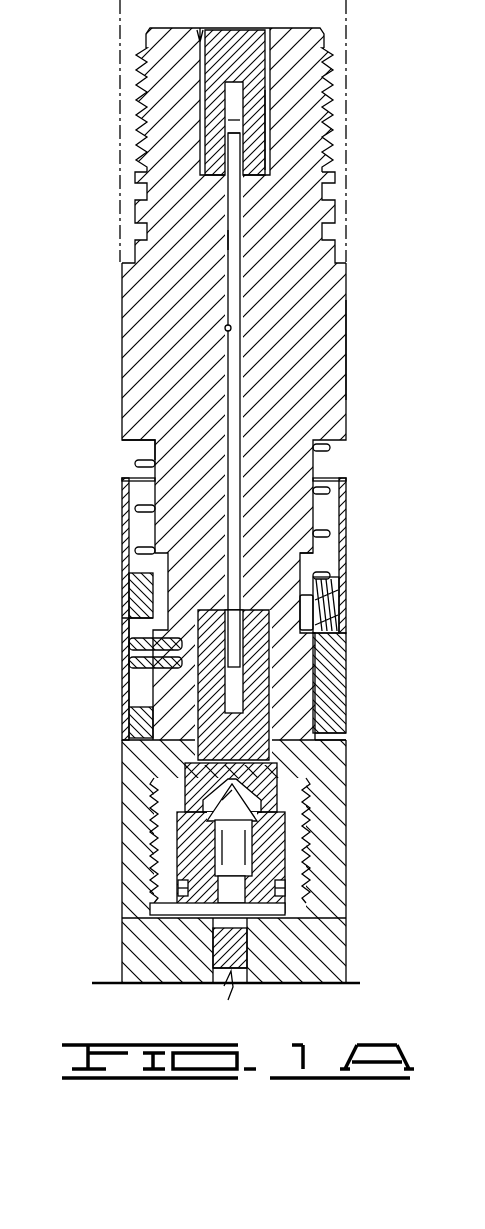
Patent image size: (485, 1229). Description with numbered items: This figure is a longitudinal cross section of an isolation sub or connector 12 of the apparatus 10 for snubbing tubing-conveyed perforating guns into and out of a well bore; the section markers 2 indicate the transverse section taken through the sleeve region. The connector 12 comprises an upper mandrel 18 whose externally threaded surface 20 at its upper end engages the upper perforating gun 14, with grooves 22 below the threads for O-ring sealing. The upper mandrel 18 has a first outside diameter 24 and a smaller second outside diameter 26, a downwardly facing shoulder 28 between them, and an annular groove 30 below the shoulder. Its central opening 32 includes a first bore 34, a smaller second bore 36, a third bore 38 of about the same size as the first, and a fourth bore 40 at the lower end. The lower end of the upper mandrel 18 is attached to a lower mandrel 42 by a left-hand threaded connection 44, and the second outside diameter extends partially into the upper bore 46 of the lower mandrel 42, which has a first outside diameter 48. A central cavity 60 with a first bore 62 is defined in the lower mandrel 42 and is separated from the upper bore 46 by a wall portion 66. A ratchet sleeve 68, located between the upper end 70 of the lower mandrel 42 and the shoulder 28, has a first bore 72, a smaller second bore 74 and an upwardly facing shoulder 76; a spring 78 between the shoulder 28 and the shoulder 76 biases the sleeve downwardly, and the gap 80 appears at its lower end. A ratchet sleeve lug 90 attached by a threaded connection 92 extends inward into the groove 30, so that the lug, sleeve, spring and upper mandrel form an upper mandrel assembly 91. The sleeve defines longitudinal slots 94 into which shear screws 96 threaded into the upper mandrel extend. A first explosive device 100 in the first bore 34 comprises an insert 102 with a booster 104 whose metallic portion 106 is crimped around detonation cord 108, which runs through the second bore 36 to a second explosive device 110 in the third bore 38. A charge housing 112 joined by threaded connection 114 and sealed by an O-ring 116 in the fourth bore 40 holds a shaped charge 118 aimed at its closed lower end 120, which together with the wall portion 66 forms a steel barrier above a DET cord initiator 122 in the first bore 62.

The apparatus 10 is at (400, 308).
The connector 12 is at (347, 286).
The upper perforating gun 14 is at (346, 155).
The upper mandrel 18 is at (312, 353).
The externally threaded surface 20 is at (325, 87).
The grooves 22 is at (323, 225).
The first outside diameter 24 is at (346, 380).
The second outside diameter 26 is at (312, 510).
The downwardly facing shoulder 28 is at (133, 447).
The annular groove 30 is at (301, 558).
The central opening 32 is at (129, 401).
The first bore 34 is at (233, 115).
The second bore 36 is at (225, 328).
The third bore 38 is at (203, 680).
The fourth bore 40 is at (178, 838).
The lower mandrel 42 is at (317, 950).
The left-hand threaded connection 44 is at (313, 862).
The upper bore 46 is at (157, 755).
The first outside diameter 48 is at (343, 971).
The central cavity 60 is at (180, 992).
The first bore 62 is at (220, 987).
The wall portion 66 is at (346, 918).
The ratchet sleeve 68 is at (331, 688).
The upper end 70 is at (334, 727).
The first bore 72 is at (133, 523).
The second bore 74 is at (153, 600).
The upwardly facing shoulder 76 is at (133, 563).
The spring 78 is at (331, 448).
The gap 80 is at (319, 744).
The ratchet sleeve lug 90 is at (334, 600).
The upper mandrel assembly 91 is at (224, 606).
The threaded connection 92 is at (334, 622).
The slots 94 is at (133, 623).
The shear screw 96 is at (125, 665).
The first explosive device 100 is at (268, 75).
The insert 102 is at (258, 125).
The booster 104 is at (233, 58).
The metallic portion 106 is at (233, 118).
The detonation cord 108 is at (228, 242).
The second explosive device 110 is at (270, 668).
The charge housing 112 is at (273, 840).
The threaded connection 114 is at (273, 792).
The O-ring 116 is at (280, 892).
The shaped charge 118 is at (190, 778).
The closed lower end 120 is at (220, 908).
The DET cord initiator 122 is at (227, 948).
The section line 2 is at (469, 431).